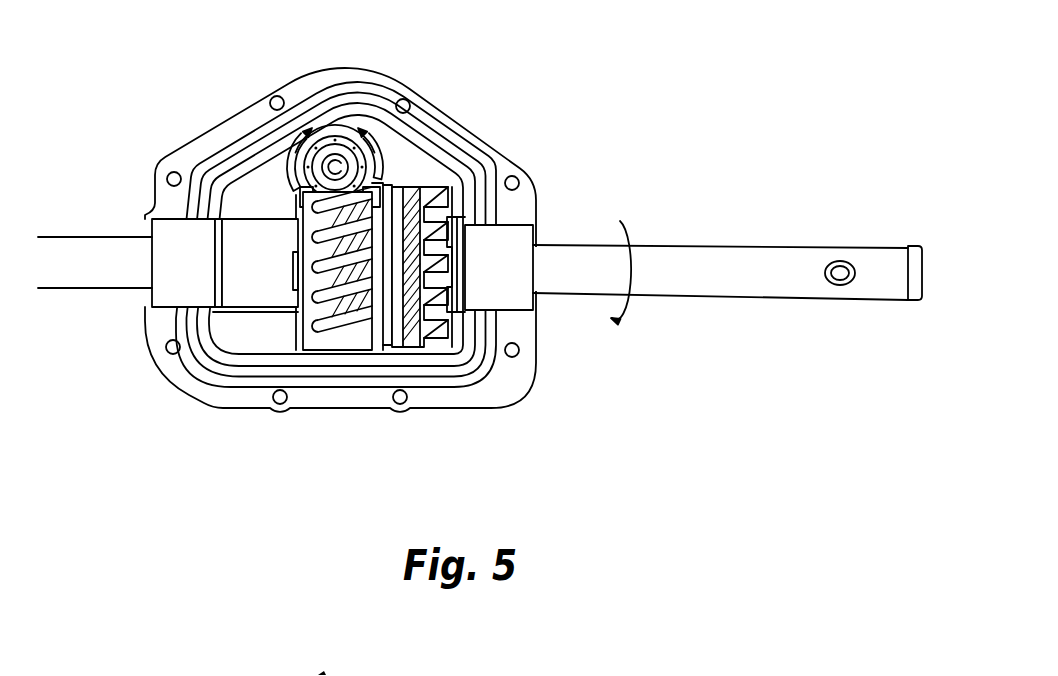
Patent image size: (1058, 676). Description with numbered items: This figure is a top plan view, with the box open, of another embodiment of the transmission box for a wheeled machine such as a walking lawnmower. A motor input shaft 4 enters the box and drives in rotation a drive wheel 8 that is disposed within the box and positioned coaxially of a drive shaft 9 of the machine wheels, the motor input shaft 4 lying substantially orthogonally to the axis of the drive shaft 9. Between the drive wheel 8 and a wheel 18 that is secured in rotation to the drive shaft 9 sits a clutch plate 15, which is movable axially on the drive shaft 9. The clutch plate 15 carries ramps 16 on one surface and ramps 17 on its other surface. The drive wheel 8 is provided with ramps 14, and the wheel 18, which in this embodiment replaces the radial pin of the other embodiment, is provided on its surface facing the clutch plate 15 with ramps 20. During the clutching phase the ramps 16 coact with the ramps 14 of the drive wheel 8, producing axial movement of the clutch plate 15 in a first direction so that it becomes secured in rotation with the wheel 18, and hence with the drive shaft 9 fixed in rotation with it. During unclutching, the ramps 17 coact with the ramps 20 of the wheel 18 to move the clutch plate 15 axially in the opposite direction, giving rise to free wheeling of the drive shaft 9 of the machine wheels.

The motor input shaft 4 is at (312, 142).
The drive wheel 8 is at (348, 313).
The drive shaft 9 is at (672, 243).
The ramps of the drive wheel 14 is at (378, 322).
The clutch plate 15 is at (399, 333).
The ramps 16 is at (378, 272).
The ramps 17 is at (430, 318).
The wheel 18 is at (500, 170).
The ramps of the wheel 20 is at (437, 200).